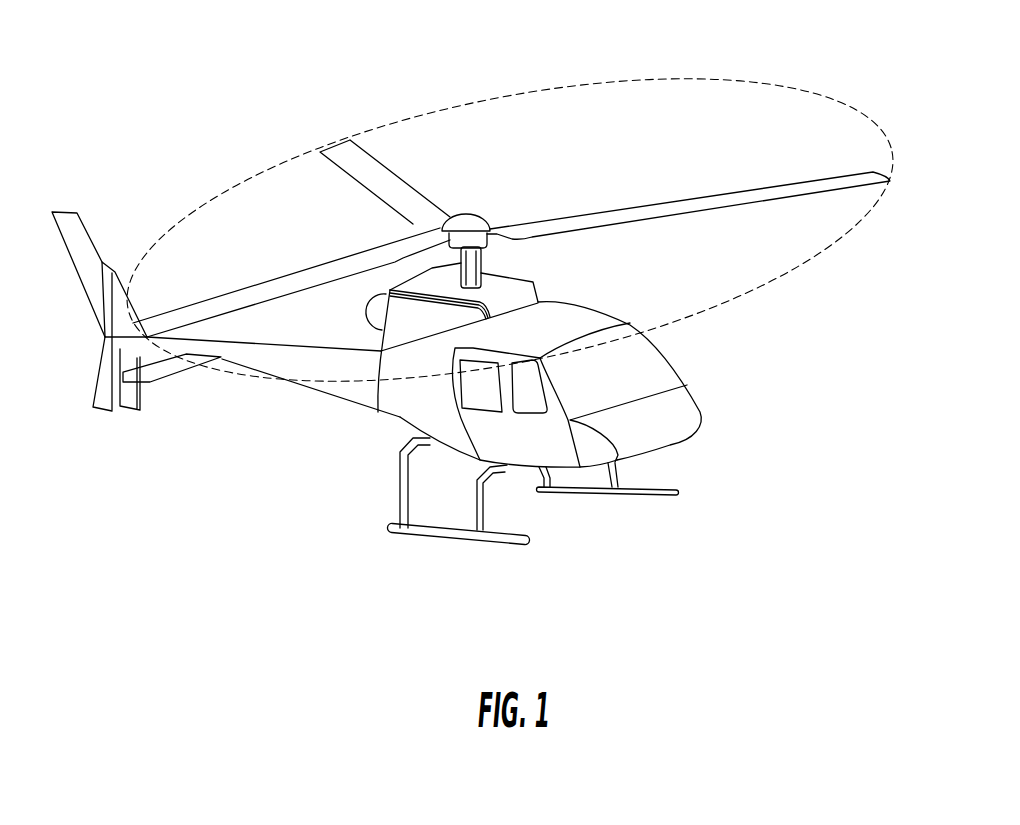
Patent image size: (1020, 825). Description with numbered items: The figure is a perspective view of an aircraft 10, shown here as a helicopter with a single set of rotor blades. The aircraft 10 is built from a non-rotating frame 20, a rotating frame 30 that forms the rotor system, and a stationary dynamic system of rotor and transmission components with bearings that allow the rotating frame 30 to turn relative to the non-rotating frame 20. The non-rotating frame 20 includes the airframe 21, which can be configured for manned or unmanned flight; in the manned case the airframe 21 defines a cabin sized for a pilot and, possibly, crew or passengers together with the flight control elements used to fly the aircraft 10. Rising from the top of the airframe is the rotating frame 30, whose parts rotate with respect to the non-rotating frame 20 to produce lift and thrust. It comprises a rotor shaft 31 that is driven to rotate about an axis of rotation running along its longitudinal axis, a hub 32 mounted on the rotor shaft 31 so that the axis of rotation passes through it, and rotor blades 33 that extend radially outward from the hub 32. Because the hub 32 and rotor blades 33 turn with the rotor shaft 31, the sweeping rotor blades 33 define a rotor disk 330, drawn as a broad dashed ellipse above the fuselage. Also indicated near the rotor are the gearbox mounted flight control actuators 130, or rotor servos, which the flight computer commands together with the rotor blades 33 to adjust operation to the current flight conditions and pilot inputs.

The aircraft 10 is at (485, 309).
The non-rotating frame 20 is at (498, 435).
The airframe 21 is at (397, 405).
The rotating frame 30 is at (511, 203).
The rotor shaft 31 is at (478, 260).
The hub 32 is at (443, 230).
The rotor blades 33 is at (348, 145).
The gearbox mounted flight control actuators 130 is at (410, 319).
The rotor disk 330 is at (497, 100).